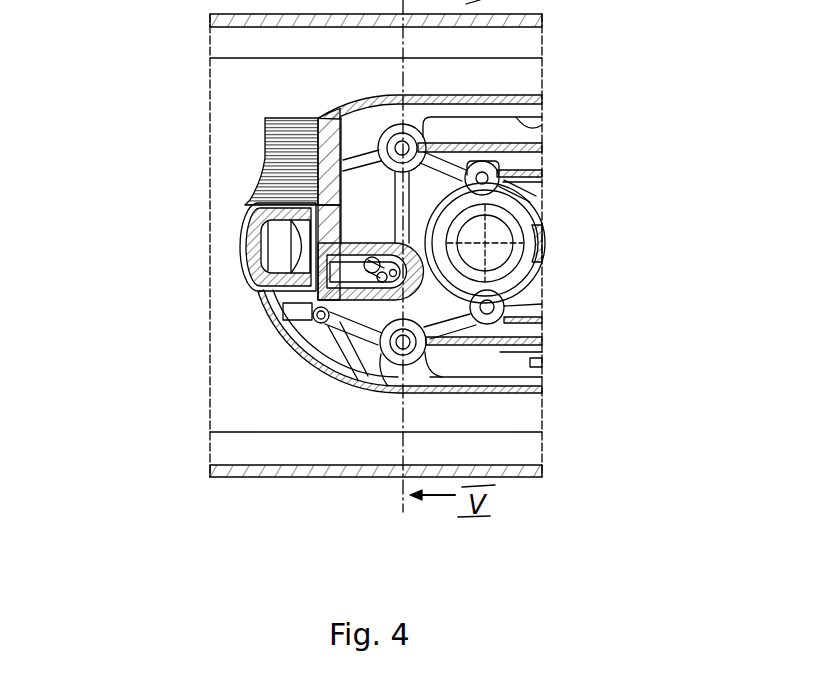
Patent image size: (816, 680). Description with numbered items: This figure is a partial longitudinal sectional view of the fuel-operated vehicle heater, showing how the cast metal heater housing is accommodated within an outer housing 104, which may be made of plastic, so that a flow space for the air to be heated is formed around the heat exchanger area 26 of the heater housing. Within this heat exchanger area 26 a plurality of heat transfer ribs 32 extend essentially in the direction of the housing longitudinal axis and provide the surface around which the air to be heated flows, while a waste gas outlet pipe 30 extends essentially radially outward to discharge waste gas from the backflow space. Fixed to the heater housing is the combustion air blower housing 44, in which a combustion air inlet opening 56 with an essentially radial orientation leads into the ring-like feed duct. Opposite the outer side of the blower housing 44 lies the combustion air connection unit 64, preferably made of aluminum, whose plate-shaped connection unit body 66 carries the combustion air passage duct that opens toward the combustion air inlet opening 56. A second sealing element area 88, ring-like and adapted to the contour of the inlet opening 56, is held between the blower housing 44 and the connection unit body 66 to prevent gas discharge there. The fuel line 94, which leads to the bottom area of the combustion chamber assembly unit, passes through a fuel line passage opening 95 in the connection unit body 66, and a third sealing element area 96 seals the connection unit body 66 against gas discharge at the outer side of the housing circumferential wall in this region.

The outer housing 104 is at (210, 17).
The combustion air blower housing 44 is at (272, 137).
The second sealing element area 88 is at (250, 221).
The combustion air inlet opening 56 is at (268, 262).
The fuel line passage opening 95 is at (343, 275).
The third sealing element area 96 is at (345, 298).
The fuel line 94 is at (385, 300).
The combustion air connection unit 64 is at (386, 282).
The connection unit body 66 is at (532, 122).
The waste gas outlet pipe 30 is at (503, 220).
The heat transfer ribs 32 is at (537, 260).
The heat exchanger area 26 is at (518, 347).